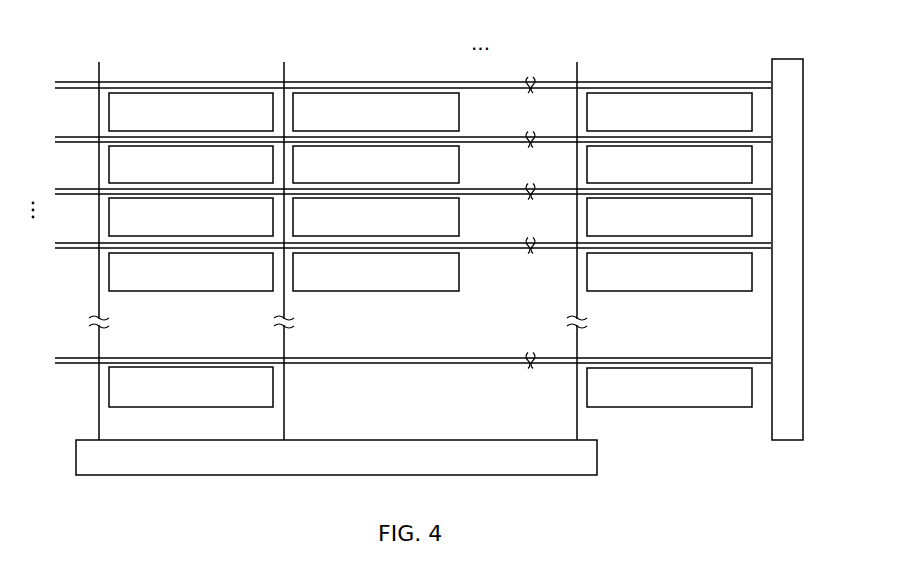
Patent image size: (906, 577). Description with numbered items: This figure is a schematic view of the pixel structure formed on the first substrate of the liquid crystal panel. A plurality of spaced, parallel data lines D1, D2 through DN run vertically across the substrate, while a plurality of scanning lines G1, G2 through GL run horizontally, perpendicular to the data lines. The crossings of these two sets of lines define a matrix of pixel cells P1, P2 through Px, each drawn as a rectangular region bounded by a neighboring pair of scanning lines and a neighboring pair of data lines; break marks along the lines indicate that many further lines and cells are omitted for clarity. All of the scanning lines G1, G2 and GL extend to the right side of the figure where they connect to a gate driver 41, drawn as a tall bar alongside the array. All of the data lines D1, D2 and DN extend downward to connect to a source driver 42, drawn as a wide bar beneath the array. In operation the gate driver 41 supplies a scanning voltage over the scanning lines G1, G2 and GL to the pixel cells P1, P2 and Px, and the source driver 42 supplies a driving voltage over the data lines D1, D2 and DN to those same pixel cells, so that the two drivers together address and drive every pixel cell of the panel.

The gate driver 41 is at (787, 249).
The source driver 42 is at (336, 457).
The scanning line G1 is at (397, 74).
The scanning line G2 is at (397, 114).
The scanning line GL is at (397, 371).
The data line D1 is at (102, 238).
The data line D2 is at (287, 238).
The data line DN is at (580, 238).
The pixel cell P1 is at (191, 112).
The pixel cell P2 is at (376, 112).
The pixel cell Px is at (669, 387).